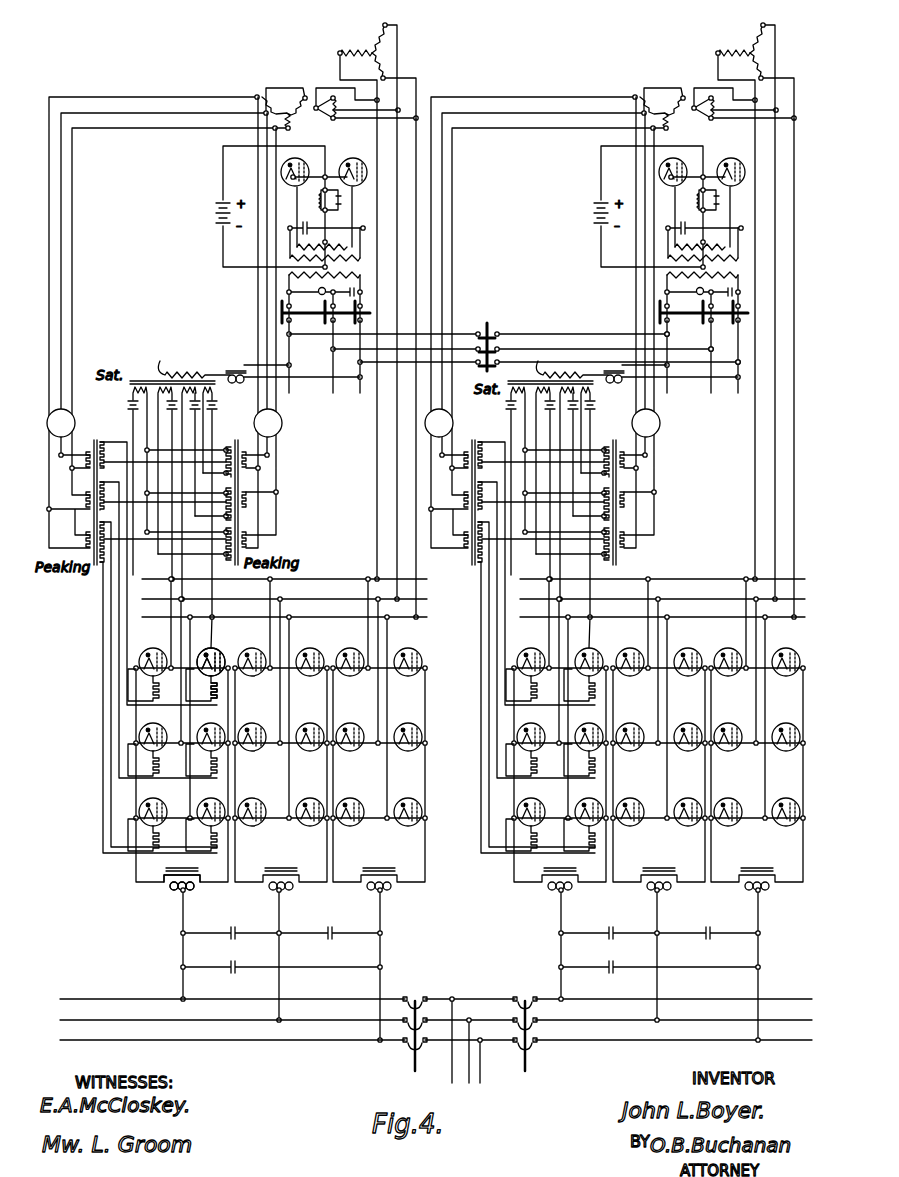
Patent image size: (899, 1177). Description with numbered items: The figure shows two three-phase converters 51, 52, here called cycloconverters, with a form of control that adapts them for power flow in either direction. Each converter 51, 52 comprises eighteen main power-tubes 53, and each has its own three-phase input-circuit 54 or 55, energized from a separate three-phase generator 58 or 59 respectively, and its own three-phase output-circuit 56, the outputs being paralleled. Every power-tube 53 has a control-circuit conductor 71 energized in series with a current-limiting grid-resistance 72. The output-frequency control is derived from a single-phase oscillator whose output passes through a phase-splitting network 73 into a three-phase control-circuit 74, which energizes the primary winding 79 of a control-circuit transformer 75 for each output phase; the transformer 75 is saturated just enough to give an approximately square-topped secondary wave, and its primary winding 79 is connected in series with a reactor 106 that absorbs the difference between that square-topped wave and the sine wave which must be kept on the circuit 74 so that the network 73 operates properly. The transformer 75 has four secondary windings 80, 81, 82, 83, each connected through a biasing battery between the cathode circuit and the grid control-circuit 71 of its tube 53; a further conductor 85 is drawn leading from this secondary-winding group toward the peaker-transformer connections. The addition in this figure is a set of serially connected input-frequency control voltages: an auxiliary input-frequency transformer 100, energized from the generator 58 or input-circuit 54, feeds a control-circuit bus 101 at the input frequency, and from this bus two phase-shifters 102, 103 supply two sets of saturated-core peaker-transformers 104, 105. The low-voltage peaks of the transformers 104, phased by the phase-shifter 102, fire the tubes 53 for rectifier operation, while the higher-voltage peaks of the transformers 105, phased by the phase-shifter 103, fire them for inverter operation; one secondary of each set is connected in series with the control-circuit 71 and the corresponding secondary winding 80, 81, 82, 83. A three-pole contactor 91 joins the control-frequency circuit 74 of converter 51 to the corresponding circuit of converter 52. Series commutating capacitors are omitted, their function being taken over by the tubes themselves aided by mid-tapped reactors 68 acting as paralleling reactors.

The auxiliary or control-circuit bus 101 is at (117, 128).
The auxiliary input-frequency transformer 100 is at (310, 88).
The three-phase generator 58 is at (363, 45).
The three-phase generator 59 is at (741, 45).
The phase-splitting network 73 is at (330, 287).
The three-phase control-circuit 74 is at (360, 381).
The control-circuit transformer 75 is at (140, 376).
The primary winding 79 is at (158, 372).
The reactor 106 is at (243, 371).
The secondary winding 80 is at (131, 391).
The secondary winding 81 is at (163, 483).
The secondary winding 82 is at (220, 402).
The secondary winding 83 is at (214, 383).
The conductor 85 is at (147, 442).
The phase-shifter 103 is at (75, 423).
The phase-shifter 102 is at (282, 424).
The input-frequency single-phase peaker-transformers 105 is at (97, 448).
The input-frequency single-phase peaker-transformers 104 is at (236, 448).
The three-phase input-circuit 54 is at (314, 618).
The three-phase input-circuit 55 is at (694, 618).
The main power-tube 53 is at (218, 650).
The control-circuit conductor 71 is at (172, 760).
The current-limiting grid-resistance 72 is at (172, 689).
The converter 51 is at (262, 700).
The converter 52 is at (641, 700).
The mid-tapped reactor 68 is at (175, 888).
The three-phase output-circuit 56 is at (205, 1000).
The three-pole contactor 91 is at (489, 331).